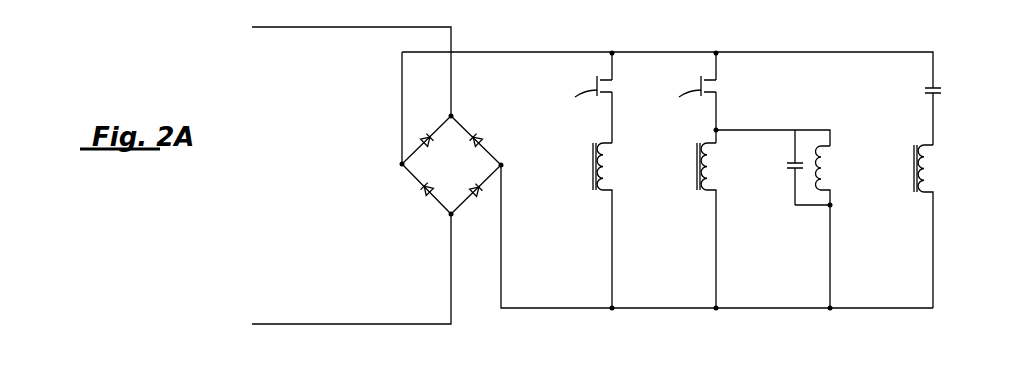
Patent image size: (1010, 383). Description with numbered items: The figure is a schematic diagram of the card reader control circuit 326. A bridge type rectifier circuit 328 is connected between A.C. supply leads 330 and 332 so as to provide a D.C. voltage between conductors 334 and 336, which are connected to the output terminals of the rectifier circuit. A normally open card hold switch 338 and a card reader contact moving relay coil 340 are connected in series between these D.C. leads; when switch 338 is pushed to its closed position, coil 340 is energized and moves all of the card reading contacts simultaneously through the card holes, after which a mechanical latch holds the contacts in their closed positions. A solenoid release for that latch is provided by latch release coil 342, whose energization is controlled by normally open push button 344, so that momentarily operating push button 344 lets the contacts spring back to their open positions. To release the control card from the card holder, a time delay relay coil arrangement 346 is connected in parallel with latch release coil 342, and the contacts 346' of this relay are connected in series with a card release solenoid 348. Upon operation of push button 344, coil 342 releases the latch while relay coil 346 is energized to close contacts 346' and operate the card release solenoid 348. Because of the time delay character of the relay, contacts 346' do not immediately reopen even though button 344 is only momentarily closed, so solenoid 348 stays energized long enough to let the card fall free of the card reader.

The card reader control circuit 326 is at (835, 47).
The bridge type rectifier circuit 328 is at (410, 178).
The A.C. supply lead 330 is at (343, 28).
The A.C. supply lead 332 is at (312, 324).
The D.C. conductor 334 is at (533, 53).
The D.C. conductor 336 is at (528, 296).
The card hold switch 338 is at (578, 109).
The card reader contact moving relay coil 340 is at (606, 156).
The latch release coil 342 is at (710, 156).
The push button 344 is at (688, 109).
The time delay relay coil arrangement 346 is at (801, 219).
The relay contacts 346' is at (908, 102).
The card release solenoid 348 is at (929, 176).